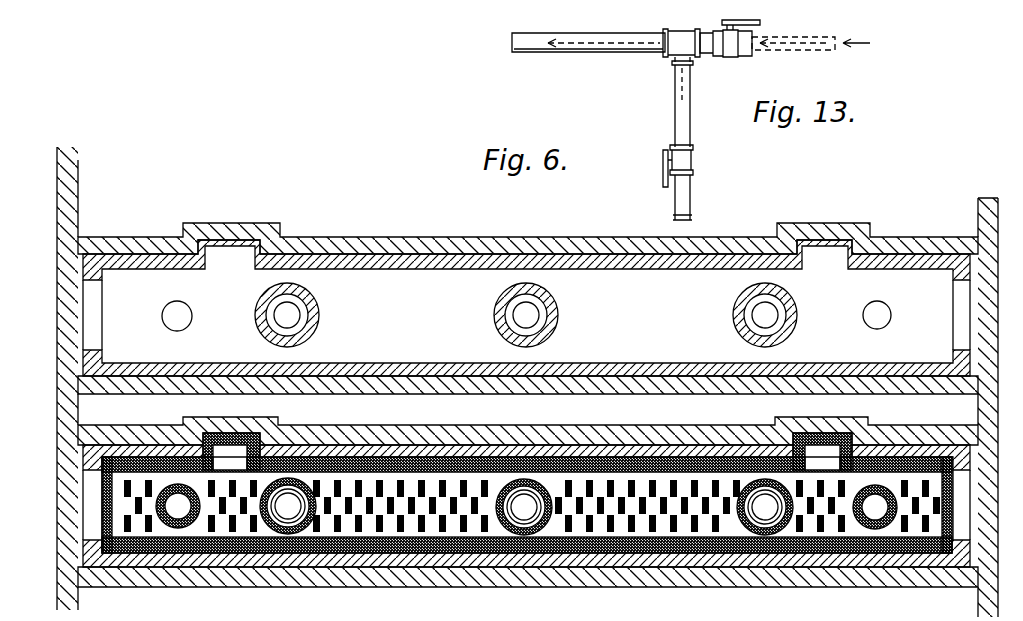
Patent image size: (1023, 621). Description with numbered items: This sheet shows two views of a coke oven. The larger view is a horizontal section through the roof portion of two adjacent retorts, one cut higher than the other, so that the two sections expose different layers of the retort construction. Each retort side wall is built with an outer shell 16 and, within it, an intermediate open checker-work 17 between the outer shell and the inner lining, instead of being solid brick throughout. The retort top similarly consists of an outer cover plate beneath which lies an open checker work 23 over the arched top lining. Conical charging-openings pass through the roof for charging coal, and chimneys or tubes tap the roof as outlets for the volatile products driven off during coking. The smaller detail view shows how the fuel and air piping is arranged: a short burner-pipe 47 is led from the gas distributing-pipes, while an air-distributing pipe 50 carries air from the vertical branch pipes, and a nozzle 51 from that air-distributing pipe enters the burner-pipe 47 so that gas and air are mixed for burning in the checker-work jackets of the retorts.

In FIG. 6, the outer shell 16 is at (558, 470).
In FIG. 6, the intermediate checker-work 17 is at (417, 475).
In FIG. 6, the checker-work 23 is at (620, 532).
In FIG. 13, the burner-pipe 47 is at (558, 52).
In FIG. 13, the air-distributing pipe 50 is at (805, 52).
In FIG. 13, the nozzle 51 is at (628, 48).